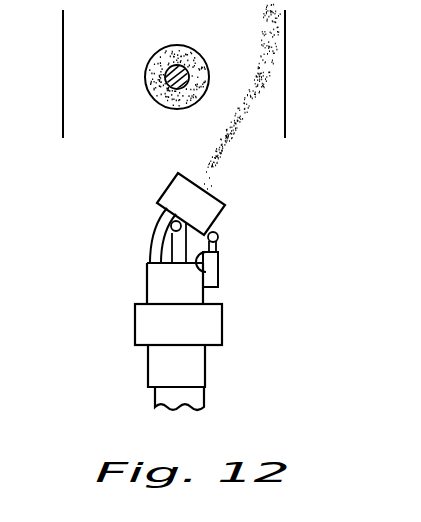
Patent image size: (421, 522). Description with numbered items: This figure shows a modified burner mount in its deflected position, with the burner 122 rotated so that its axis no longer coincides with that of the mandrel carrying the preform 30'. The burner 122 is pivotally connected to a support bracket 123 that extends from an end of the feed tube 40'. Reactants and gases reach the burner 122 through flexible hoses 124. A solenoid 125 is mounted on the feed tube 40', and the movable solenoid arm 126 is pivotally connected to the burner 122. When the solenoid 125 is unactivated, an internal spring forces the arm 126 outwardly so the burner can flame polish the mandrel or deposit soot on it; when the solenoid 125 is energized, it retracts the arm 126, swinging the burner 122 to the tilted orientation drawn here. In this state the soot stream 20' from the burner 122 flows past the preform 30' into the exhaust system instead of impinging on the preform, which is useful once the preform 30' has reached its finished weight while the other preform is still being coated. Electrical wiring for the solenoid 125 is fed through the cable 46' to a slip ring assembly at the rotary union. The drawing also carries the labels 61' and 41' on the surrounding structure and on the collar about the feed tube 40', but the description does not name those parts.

The housing wall 61' is at (90, 74).
The preform 30' is at (177, 54).
The soot stream 20' is at (214, 97).
The burner 122 is at (223, 209).
The flexible hoses 124 is at (157, 230).
The support bracket 123 is at (148, 277).
The solenoid arm 126 is at (205, 267).
The solenoid 125 is at (218, 275).
The collar 41' is at (144, 324).
The feed tube 40' is at (217, 325).
The cable 46' is at (218, 402).